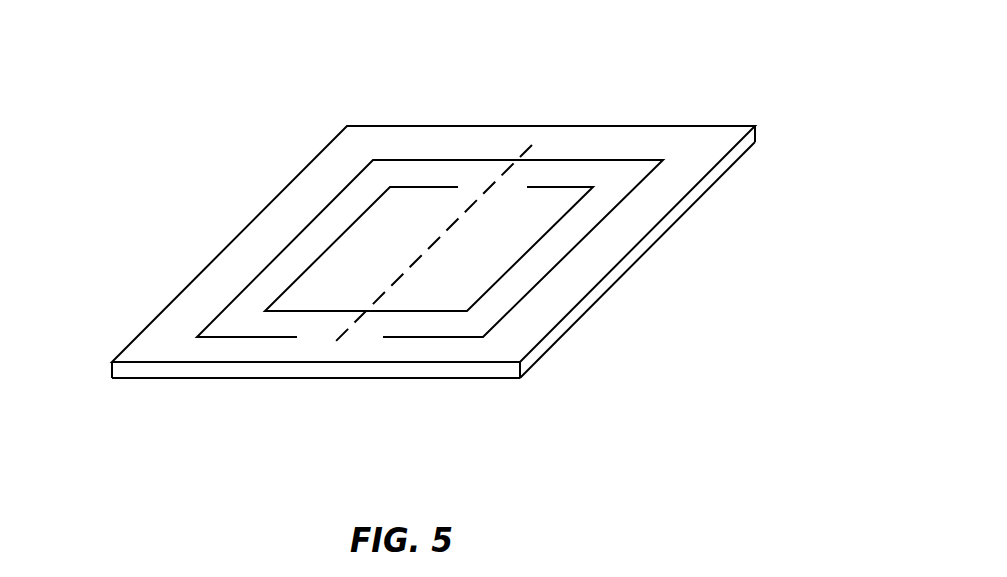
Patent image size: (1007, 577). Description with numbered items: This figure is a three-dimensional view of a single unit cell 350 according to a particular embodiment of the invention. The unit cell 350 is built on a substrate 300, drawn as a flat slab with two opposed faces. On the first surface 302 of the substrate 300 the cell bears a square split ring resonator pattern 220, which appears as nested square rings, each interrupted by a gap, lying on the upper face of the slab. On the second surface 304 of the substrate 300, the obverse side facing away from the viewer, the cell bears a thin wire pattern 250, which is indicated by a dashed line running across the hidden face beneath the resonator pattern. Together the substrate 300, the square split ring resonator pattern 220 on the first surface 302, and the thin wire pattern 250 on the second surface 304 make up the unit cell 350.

The square split ring resonator pattern 220 is at (298, 235).
The thin wire pattern 250 is at (349, 322).
The substrate 300 is at (110, 370).
The first surface 302 is at (178, 320).
The second surface 304 is at (583, 317).
The unit cell 350 is at (803, 70).